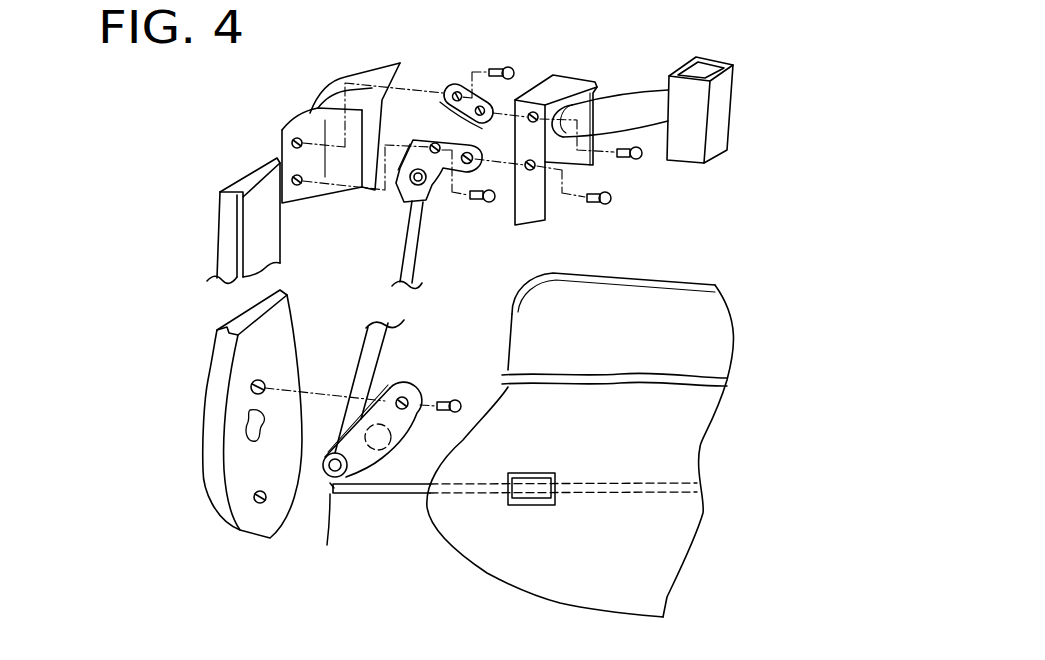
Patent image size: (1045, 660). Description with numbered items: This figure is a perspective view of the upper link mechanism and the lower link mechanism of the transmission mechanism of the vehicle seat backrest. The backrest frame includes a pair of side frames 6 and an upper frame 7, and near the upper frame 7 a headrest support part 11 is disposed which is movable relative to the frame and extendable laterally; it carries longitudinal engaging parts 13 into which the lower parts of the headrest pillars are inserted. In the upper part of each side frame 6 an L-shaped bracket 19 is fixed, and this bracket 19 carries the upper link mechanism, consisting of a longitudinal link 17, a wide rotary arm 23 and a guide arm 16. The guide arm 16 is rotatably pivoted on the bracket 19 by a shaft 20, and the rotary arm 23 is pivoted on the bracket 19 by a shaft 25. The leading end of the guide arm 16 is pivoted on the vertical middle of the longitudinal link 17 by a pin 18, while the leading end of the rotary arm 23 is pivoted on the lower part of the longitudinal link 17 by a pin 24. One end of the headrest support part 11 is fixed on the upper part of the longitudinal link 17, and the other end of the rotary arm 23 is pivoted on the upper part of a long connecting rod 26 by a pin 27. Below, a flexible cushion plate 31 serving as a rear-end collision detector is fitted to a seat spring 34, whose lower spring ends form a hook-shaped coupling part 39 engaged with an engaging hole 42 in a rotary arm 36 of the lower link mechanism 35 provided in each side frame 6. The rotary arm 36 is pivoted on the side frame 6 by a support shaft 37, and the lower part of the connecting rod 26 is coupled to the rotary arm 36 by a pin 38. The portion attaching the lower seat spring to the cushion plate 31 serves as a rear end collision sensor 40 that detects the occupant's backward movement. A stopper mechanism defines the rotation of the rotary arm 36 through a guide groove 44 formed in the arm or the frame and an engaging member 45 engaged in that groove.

The side frame 6 is at (235, 180).
The upper frame 7 is at (328, 88).
The headrest support part 11 is at (625, 96).
The longitudinal engaging part 13 is at (677, 73).
The guide arm 16 is at (461, 86).
The longitudinal link 17 is at (563, 83).
The pin 18 is at (639, 161).
The L-shaped bracket 19 is at (285, 129).
The shaft 20 is at (508, 67).
The rotary arm 23 is at (438, 183).
The pin 24 is at (602, 206).
The shaft 25 is at (485, 205).
The connecting rod 26 is at (407, 245).
The pin 27 is at (412, 181).
The cushion plate 31 is at (520, 313).
The seat spring 34 is at (393, 495).
The lower link mechanism 35 is at (353, 521).
The rotary arm 36 is at (372, 470).
The support shaft 37 is at (453, 400).
The pin 38 is at (327, 481).
The coupling part 39 is at (330, 494).
The rear end collision sensor 40 is at (688, 470).
The engaging hole 42 is at (330, 484).
The guide groove 44 is at (243, 425).
The engaging member 45 is at (388, 438).